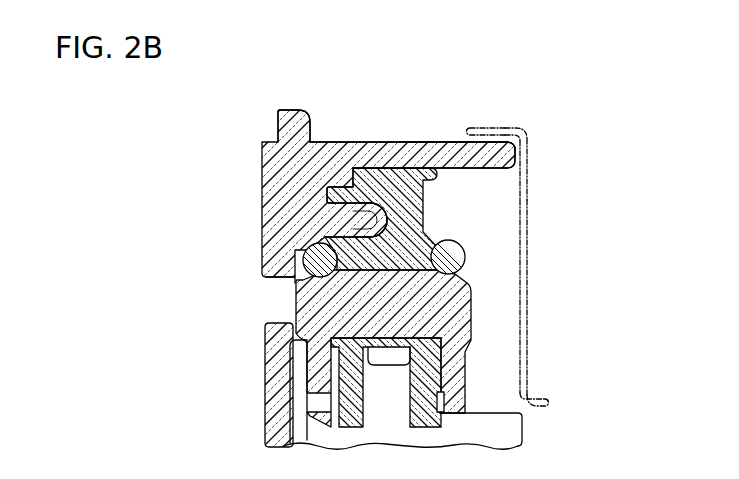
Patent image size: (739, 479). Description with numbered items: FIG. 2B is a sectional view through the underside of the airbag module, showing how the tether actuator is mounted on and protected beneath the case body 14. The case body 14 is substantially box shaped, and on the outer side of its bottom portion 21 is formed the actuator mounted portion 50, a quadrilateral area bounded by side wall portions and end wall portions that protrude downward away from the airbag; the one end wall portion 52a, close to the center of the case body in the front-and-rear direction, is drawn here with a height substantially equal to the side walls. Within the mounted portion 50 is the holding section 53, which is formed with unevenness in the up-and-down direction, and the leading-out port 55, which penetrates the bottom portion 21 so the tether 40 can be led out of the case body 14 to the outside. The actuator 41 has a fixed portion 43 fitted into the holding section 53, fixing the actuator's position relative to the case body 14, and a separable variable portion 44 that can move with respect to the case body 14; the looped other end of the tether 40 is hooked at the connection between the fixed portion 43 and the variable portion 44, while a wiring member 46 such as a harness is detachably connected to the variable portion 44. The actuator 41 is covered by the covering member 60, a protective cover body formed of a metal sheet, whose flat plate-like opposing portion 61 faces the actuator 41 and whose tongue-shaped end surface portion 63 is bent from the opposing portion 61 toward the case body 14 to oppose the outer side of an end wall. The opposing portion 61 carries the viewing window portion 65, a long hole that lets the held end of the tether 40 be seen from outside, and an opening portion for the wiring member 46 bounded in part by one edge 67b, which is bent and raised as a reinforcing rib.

The case body 14 is at (369, 273).
The bottom portion 21 is at (311, 121).
The actuator mounted portion 50 is at (412, 131).
The one end wall portion 52a is at (407, 146).
The holding section 53 is at (340, 222).
The leading-out port 55 is at (277, 299).
The fixed portion 43 is at (425, 200).
The tether 40 is at (456, 255).
The actuator 41 is at (490, 317).
The variable portion 44 is at (444, 373).
The wiring member 46 is at (523, 418).
The covering member 60 is at (527, 238).
The opposing portion 61 is at (529, 178).
The end surface portion 63 is at (478, 127).
The viewing window portion 65 is at (527, 217).
The one edge 67b is at (534, 400).